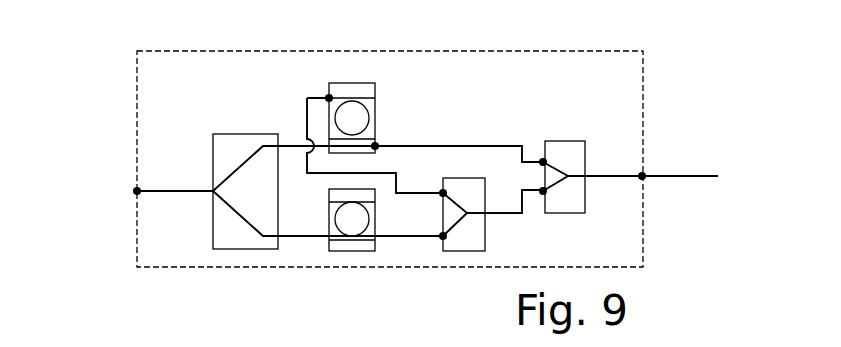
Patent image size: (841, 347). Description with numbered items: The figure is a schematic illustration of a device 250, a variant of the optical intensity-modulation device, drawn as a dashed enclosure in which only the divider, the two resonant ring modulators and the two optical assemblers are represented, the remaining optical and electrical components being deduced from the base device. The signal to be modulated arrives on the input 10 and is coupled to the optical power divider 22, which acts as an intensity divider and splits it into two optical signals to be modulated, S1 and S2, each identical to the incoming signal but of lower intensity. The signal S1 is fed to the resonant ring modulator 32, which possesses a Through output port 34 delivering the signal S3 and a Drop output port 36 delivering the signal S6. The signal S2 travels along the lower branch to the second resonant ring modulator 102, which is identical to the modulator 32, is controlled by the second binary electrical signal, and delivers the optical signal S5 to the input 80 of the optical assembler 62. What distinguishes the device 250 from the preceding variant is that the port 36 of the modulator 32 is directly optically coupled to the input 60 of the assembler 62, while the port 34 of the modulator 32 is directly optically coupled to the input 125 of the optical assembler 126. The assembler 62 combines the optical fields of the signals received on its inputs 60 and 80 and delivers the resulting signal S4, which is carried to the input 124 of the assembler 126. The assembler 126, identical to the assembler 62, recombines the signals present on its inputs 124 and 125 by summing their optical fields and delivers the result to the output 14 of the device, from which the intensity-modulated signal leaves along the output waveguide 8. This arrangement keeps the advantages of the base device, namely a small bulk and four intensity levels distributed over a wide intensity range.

The output optical waveguide 8 is at (673, 173).
The input 10 is at (135, 191).
The output 14 is at (645, 177).
The optical power divider 22 is at (240, 236).
The resonant ring modulator 32 is at (381, 104).
The output port 34 is at (377, 144).
The output port 36 is at (327, 98).
The input 60 is at (442, 191).
The optical assembler 62 is at (486, 242).
The input 80 is at (443, 238).
The resonant ring modulator 102 is at (352, 252).
The input 124 is at (545, 192).
The input 125 is at (542, 160).
The optical assembler 126 is at (573, 141).
The device 250 is at (628, 51).
The optical signal to be modulated S1 is at (292, 142).
The optical signal to be modulated S2 is at (315, 238).
The optical signal S3 is at (460, 145).
The optical signal S4 is at (515, 215).
The optical signal S5 is at (405, 238).
The optical signal S6 is at (390, 172).